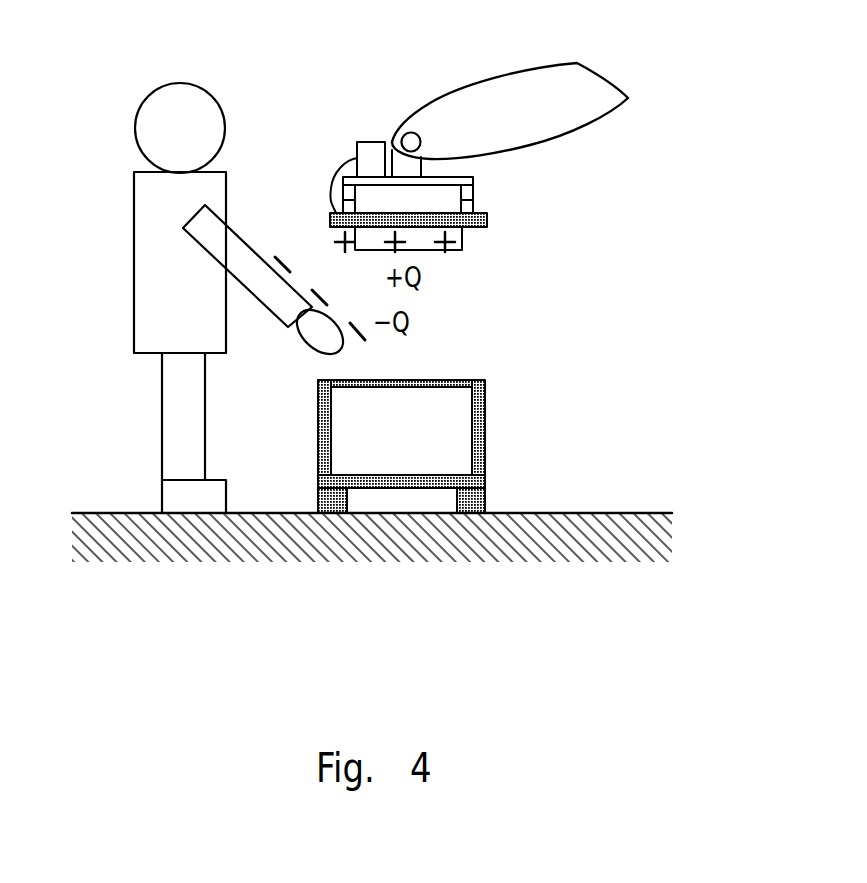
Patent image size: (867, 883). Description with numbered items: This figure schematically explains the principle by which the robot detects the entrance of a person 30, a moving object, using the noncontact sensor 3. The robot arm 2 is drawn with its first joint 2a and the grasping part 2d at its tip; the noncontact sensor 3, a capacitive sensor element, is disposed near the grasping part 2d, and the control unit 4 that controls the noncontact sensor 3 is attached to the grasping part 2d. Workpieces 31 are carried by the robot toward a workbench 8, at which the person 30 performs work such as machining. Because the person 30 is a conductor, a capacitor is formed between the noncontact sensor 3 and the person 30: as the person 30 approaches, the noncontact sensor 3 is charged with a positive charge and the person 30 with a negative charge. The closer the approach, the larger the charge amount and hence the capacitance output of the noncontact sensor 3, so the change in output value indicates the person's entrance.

The person 30 is at (242, 256).
The robot arm 2 is at (510, 92).
The first joint 2a is at (419, 99).
The control unit 4 is at (357, 139).
The grasping part 2d is at (476, 181).
The noncontact sensor 3 is at (443, 208).
The workpiece 31 is at (443, 265).
The workbench 8 is at (371, 446).